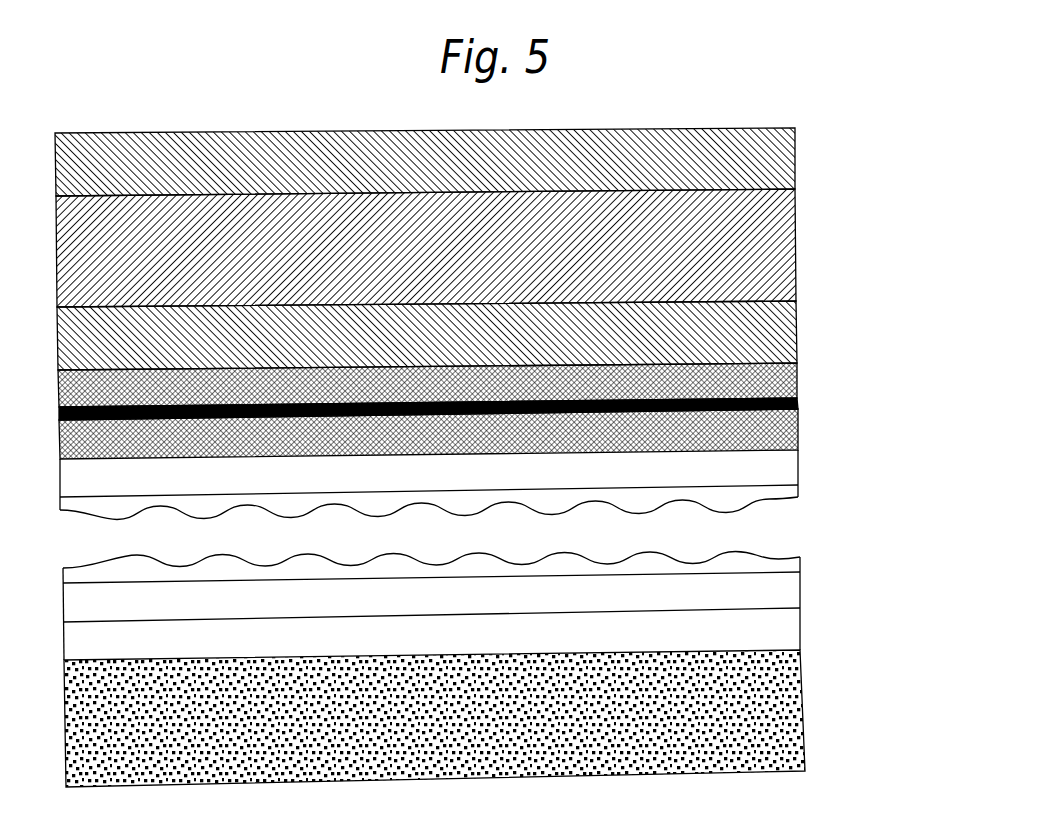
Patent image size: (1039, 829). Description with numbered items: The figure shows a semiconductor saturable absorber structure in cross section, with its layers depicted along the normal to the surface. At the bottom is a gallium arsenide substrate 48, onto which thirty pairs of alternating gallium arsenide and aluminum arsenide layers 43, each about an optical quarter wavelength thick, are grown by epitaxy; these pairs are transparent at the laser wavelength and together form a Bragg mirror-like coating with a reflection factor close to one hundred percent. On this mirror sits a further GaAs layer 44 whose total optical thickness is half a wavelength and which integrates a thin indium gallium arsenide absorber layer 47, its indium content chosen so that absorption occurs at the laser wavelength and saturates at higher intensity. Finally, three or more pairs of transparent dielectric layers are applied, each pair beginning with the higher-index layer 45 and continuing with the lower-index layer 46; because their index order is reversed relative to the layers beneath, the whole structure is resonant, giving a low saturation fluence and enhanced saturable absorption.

The pairs of layers of alternating GaAs and AlAs 43 is at (802, 450).
The GaAs layer 44 is at (797, 378).
The layer having a higher index of refraction 45 is at (777, 248).
The layer having a lower index of refraction 46 is at (770, 165).
The absorber layer 47 is at (798, 407).
The gallium arsenide substrate 48 is at (780, 703).